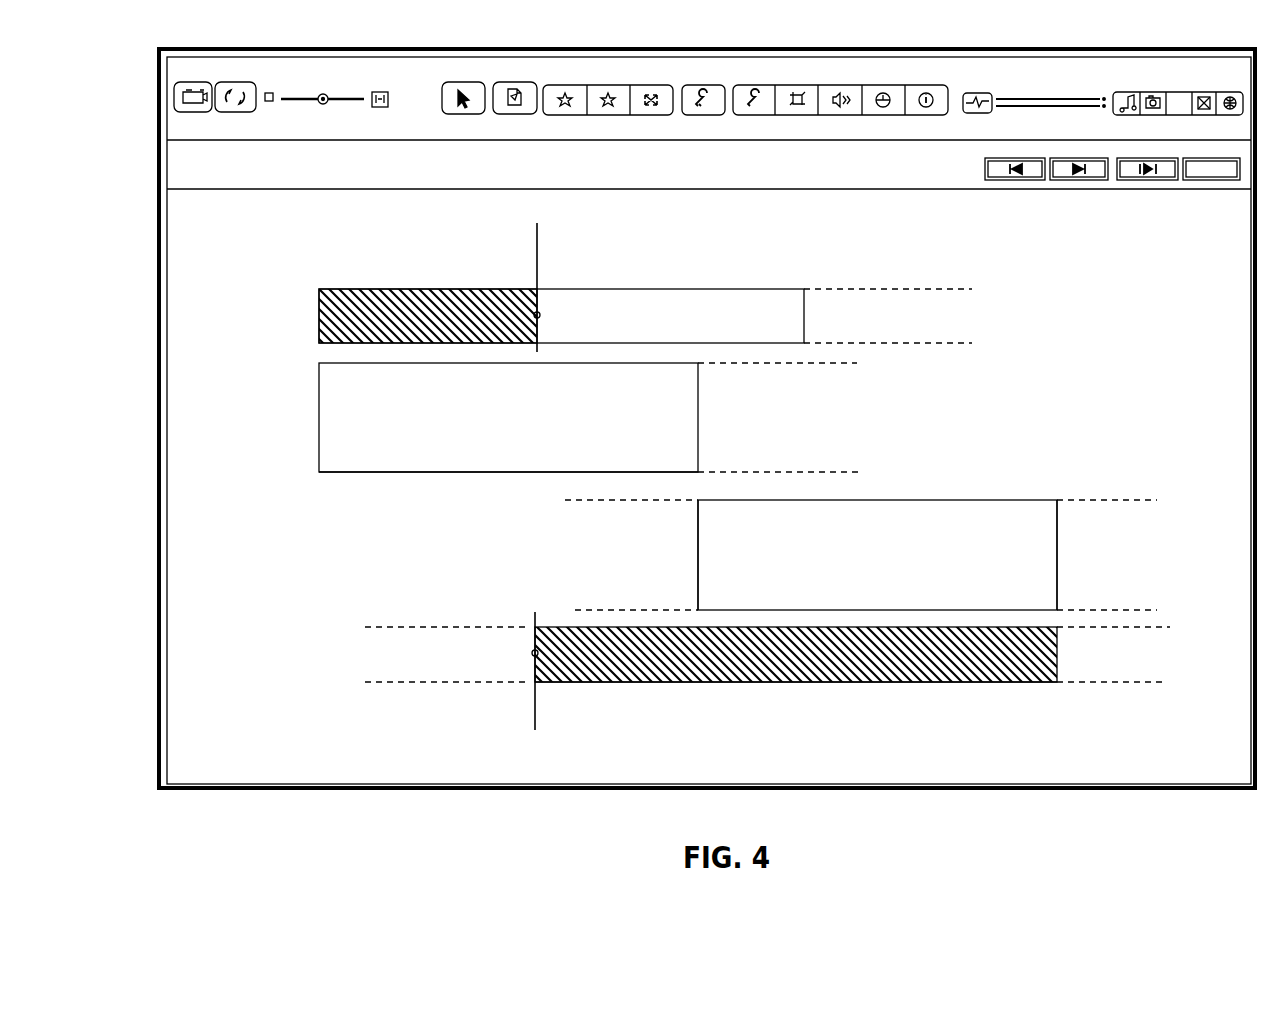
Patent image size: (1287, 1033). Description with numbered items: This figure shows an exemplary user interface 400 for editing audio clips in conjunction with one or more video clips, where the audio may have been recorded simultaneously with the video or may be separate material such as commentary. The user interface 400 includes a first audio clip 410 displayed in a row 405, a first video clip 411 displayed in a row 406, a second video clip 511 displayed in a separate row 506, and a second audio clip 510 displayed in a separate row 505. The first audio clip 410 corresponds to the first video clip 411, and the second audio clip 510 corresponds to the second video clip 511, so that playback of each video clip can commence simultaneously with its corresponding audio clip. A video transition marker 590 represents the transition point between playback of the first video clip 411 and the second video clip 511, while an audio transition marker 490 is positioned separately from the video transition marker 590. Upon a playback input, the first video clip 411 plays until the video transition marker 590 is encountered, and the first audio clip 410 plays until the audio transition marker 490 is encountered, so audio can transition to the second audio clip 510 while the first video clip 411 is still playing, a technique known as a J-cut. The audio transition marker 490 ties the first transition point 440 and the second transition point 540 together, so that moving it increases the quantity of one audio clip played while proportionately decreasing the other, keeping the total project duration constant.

The user interface 400 is at (1185, 263).
The row 405 is at (955, 339).
The row 406 is at (868, 444).
The first audio clip 410 is at (412, 287).
The first video clip 411 is at (375, 468).
The first transition point 440 is at (541, 312).
The audio transition marker 490 is at (537, 247).
The row 505 is at (1133, 676).
The row 506 is at (641, 587).
The second audio clip 510 is at (843, 678).
The second video clip 511 is at (1054, 498).
The second transition point 540 is at (532, 653).
The video transition marker 590 is at (698, 482).